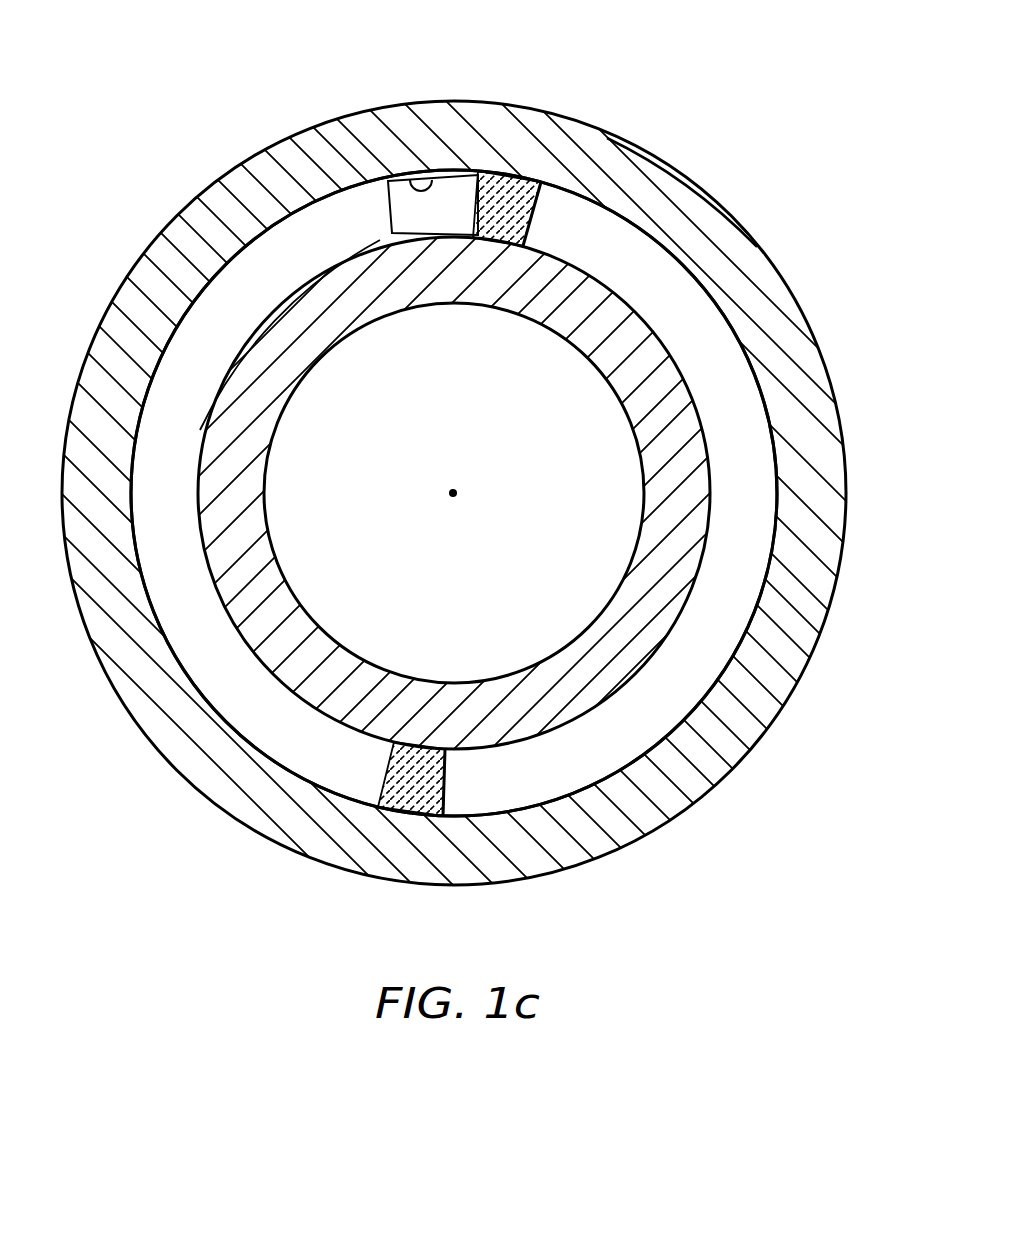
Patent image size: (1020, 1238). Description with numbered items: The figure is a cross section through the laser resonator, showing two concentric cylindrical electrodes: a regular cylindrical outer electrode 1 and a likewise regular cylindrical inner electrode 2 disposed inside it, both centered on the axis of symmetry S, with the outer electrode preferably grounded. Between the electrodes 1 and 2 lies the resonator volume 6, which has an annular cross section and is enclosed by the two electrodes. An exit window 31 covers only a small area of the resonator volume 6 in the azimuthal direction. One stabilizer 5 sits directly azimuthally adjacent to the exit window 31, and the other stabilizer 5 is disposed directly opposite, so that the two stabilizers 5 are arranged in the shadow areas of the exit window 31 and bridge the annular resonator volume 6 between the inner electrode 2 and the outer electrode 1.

The outer electrode 1 is at (133, 665).
The inner electrode 2 is at (314, 655).
The stabilizer 5 is at (520, 212).
The resonator volume 6 is at (658, 288).
The exit window 31 is at (408, 182).
The axis of symmetry S is at (457, 494).